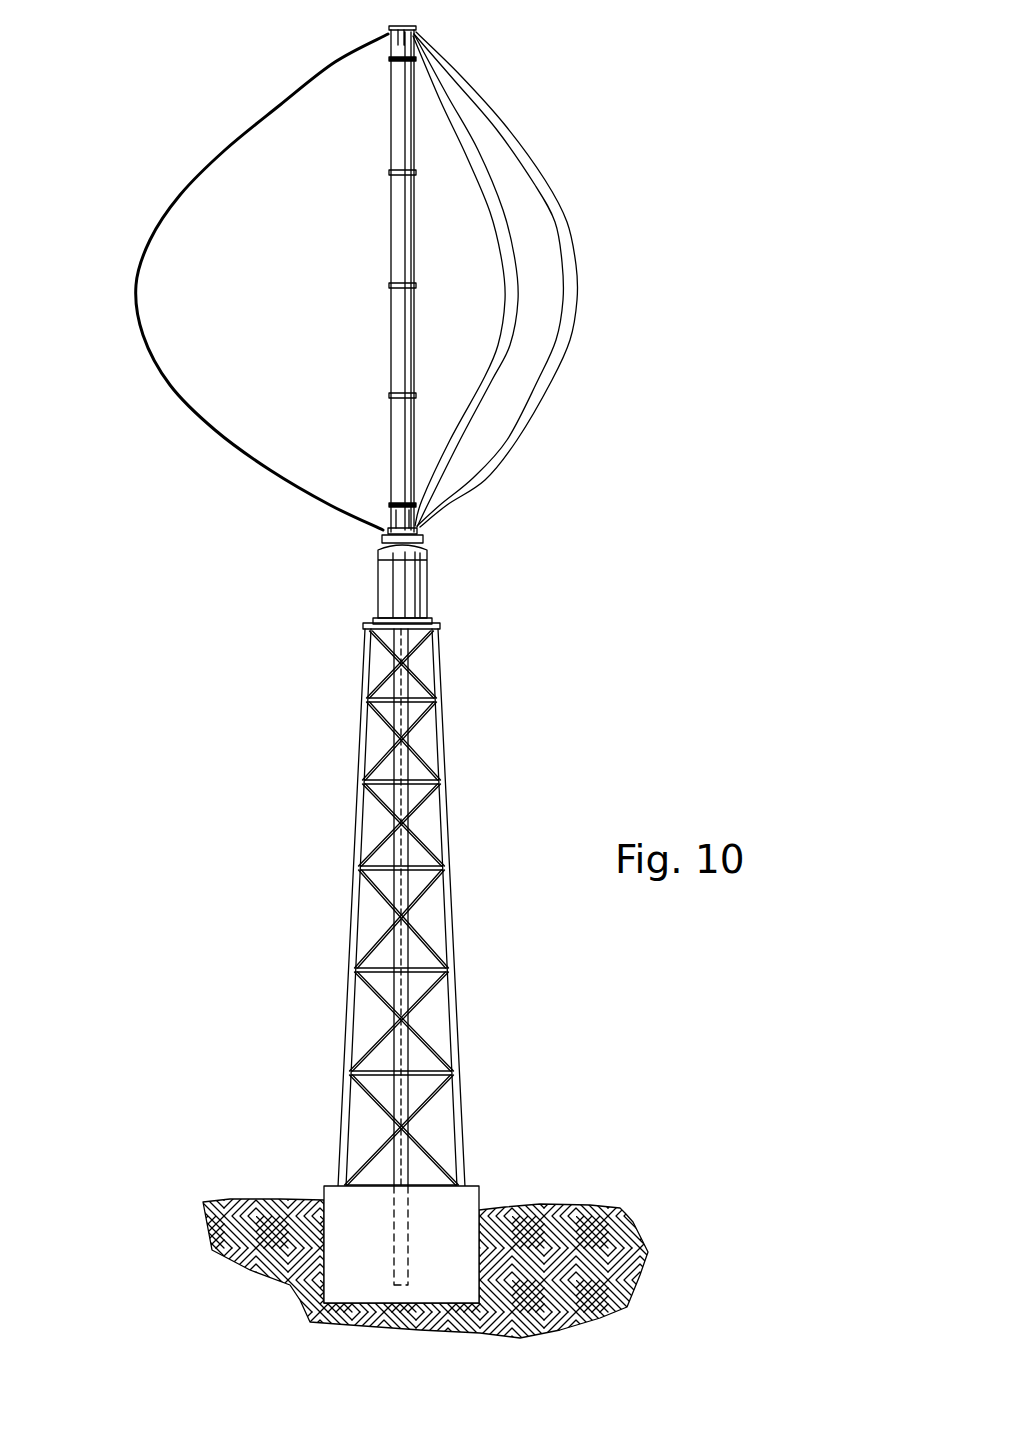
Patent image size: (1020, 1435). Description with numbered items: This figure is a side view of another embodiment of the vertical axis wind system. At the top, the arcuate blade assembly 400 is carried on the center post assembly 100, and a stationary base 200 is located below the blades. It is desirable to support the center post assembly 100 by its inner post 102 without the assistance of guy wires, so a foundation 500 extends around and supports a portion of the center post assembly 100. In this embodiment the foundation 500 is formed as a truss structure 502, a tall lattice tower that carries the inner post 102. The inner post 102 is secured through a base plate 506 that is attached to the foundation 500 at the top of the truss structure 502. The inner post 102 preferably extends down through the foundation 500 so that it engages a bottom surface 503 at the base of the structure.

The arcuate blade assembly 400 is at (250, 92).
The center post assembly 100 is at (382, 345).
The stationary base 200 is at (445, 572).
The base plate 506 is at (365, 625).
The foundation 500 is at (374, 909).
The truss structure 502 is at (356, 864).
The inner post 102 is at (395, 1058).
The bottom surface 503 is at (482, 1187).